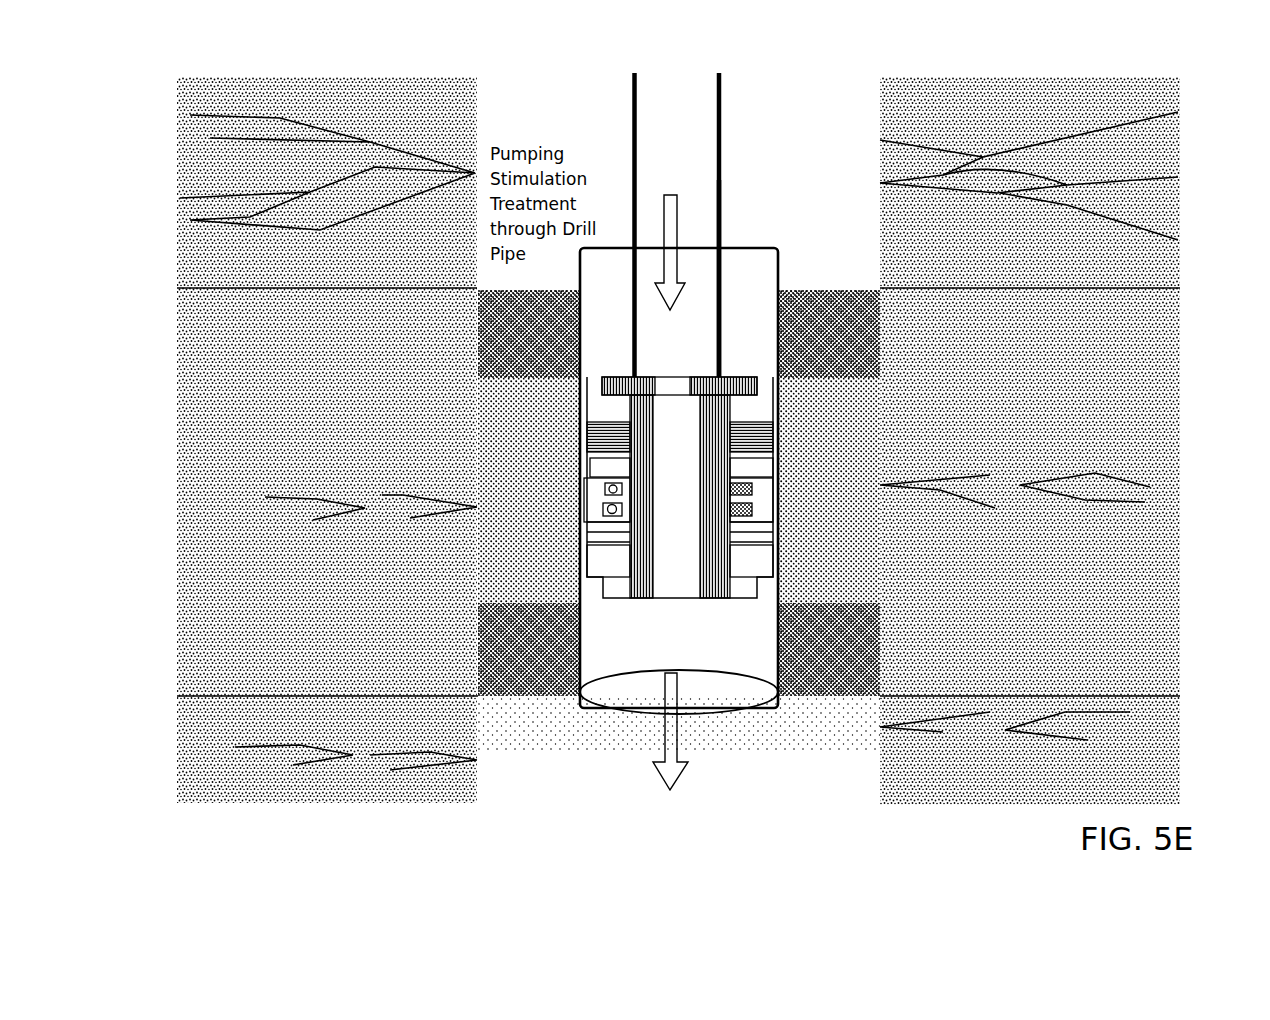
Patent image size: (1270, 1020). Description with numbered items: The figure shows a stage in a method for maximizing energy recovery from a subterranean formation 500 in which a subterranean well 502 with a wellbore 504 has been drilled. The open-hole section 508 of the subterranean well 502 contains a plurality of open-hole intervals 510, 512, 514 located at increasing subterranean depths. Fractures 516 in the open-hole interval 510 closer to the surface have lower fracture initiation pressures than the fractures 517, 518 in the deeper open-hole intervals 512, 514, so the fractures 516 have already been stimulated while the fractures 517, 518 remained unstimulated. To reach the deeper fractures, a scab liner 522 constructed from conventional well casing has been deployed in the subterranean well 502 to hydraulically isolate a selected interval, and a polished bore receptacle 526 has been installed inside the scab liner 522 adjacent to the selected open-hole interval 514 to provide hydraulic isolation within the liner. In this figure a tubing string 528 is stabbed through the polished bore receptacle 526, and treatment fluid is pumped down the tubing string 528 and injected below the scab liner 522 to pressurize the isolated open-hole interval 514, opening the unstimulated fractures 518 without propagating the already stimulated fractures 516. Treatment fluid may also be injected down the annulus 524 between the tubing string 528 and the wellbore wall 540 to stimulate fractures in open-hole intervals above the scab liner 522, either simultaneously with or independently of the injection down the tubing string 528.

The subterranean formation 500 is at (394, 85).
The subterranean well 502 is at (545, 102).
The wellbore 504 is at (735, 112).
The open-hole section 508 is at (804, 118).
The open-hole interval 510 is at (893, 112).
The open-hole interval 512 is at (1150, 558).
The open-hole interval 514 is at (898, 770).
The fractures 516 is at (960, 193).
The fractures 517 is at (952, 493).
The fractures 518 is at (1010, 737).
The scab liner 522 is at (781, 268).
The annulus 524 is at (592, 150).
The polished bore receptacle 526 is at (723, 375).
The tubing string 528 is at (724, 200).
The wellbore wall 540 is at (880, 230).